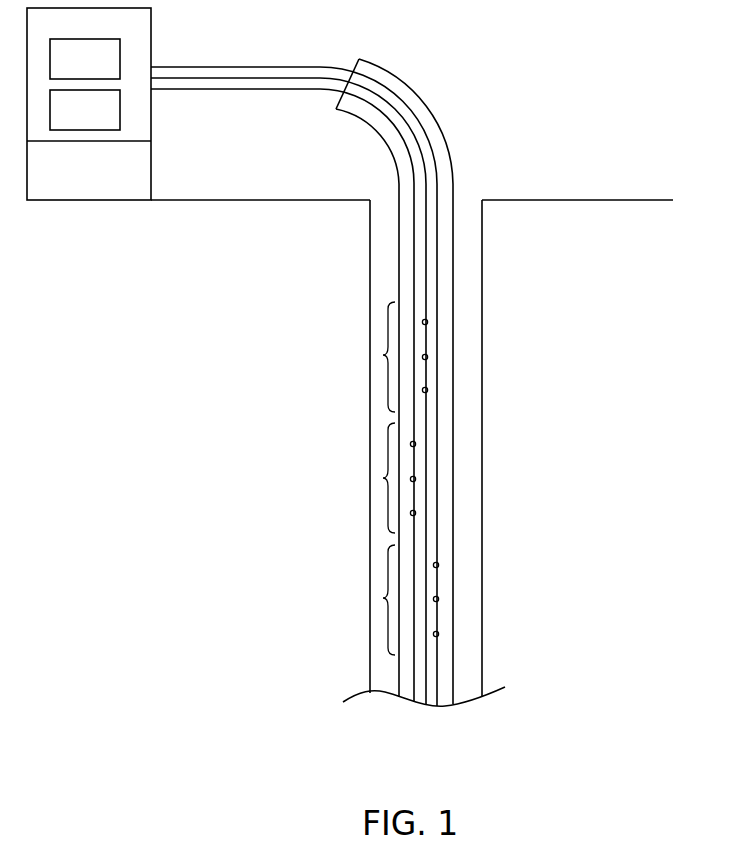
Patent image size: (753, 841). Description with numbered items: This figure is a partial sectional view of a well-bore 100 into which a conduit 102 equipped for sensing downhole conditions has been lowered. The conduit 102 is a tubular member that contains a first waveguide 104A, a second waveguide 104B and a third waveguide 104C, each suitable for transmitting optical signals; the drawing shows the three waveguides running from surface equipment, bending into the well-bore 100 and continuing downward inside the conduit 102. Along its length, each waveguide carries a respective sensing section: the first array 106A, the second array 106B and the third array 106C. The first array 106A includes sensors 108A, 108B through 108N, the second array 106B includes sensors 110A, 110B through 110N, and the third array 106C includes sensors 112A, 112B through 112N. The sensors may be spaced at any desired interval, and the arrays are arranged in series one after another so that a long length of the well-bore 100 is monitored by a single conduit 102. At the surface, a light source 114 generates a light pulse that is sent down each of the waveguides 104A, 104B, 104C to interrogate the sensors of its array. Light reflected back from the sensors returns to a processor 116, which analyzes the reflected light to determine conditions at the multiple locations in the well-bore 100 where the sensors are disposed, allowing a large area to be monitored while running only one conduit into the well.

The well-bore 100 is at (478, 263).
The conduit 102 is at (445, 106).
The first waveguide 104A is at (272, 77).
The second waveguide 104B is at (297, 89).
The third waveguide 104C is at (303, 66).
The first array 106A is at (383, 355).
The second array 106B is at (383, 478).
The third array 106C is at (383, 598).
The sensor 108A is at (428, 322).
The sensor 108B is at (428, 357).
The sensor 108N is at (428, 390).
The sensor 110A is at (416, 444).
The sensor 110B is at (416, 479).
The sensor 110N is at (416, 513).
The sensor 112A is at (439, 565).
The sensor 112B is at (439, 599).
The sensor 112N is at (439, 634).
The light source 114 is at (85, 59).
The processor 116 is at (85, 110).